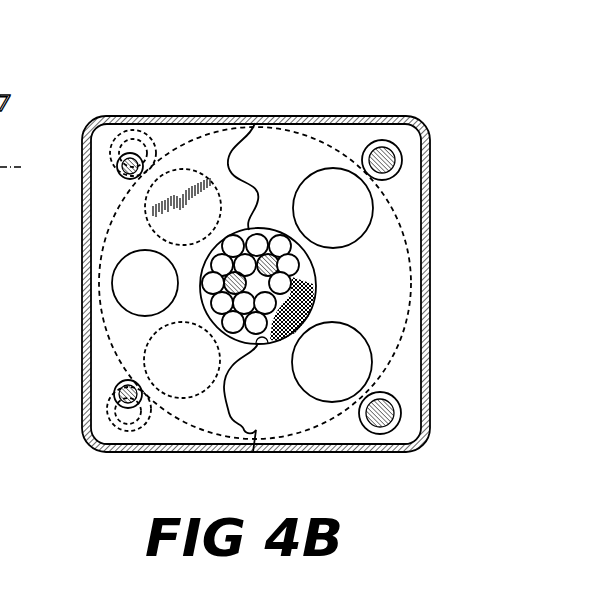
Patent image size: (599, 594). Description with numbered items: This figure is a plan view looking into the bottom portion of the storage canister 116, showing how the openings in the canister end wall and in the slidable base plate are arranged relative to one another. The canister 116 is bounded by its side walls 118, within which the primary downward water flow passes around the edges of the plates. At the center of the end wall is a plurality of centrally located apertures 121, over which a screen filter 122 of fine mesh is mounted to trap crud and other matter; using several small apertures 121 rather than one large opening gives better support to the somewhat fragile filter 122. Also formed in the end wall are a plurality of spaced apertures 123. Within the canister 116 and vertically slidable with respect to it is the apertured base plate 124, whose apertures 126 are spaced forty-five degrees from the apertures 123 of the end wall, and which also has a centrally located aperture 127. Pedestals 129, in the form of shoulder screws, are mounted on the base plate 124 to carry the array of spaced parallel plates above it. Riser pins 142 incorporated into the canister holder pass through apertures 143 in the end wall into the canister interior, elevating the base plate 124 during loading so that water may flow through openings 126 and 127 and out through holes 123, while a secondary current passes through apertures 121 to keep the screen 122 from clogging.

The storage canister 116 is at (228, 70).
The side walls 118 is at (190, 117).
The apertures 121 is at (286, 265).
The screen filter 122 is at (312, 303).
The spaced apertures 123 is at (360, 236).
The apertured base plate 124 is at (204, 138).
The apertures 126 is at (270, 143).
The centrally located aperture 127 is at (262, 342).
The pedestals 129 is at (124, 165).
The riser pins 142 is at (112, 147).
The apertures 143 is at (395, 178).